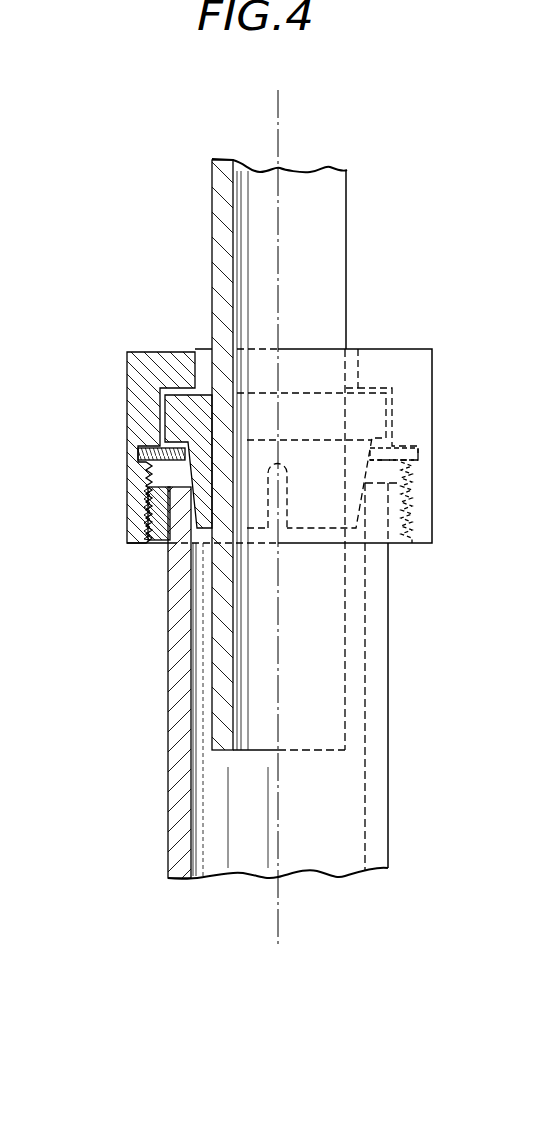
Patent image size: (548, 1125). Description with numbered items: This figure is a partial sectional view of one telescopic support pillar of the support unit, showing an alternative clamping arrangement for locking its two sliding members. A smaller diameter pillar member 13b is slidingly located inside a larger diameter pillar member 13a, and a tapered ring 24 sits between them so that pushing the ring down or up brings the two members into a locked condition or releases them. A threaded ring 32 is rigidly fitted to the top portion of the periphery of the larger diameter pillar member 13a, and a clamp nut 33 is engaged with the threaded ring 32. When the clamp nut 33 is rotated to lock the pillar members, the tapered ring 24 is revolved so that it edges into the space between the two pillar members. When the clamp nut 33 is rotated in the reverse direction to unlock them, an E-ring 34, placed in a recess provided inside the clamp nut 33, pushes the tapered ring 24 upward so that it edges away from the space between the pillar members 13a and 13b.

The larger diameter pillar member 13a is at (373, 759).
The smaller diameter pillar member 13b is at (347, 263).
The tapered ring 24 is at (187, 407).
The threaded ring 32 is at (157, 538).
The clamp nut 33 is at (140, 370).
The E-ring 34 is at (127, 442).